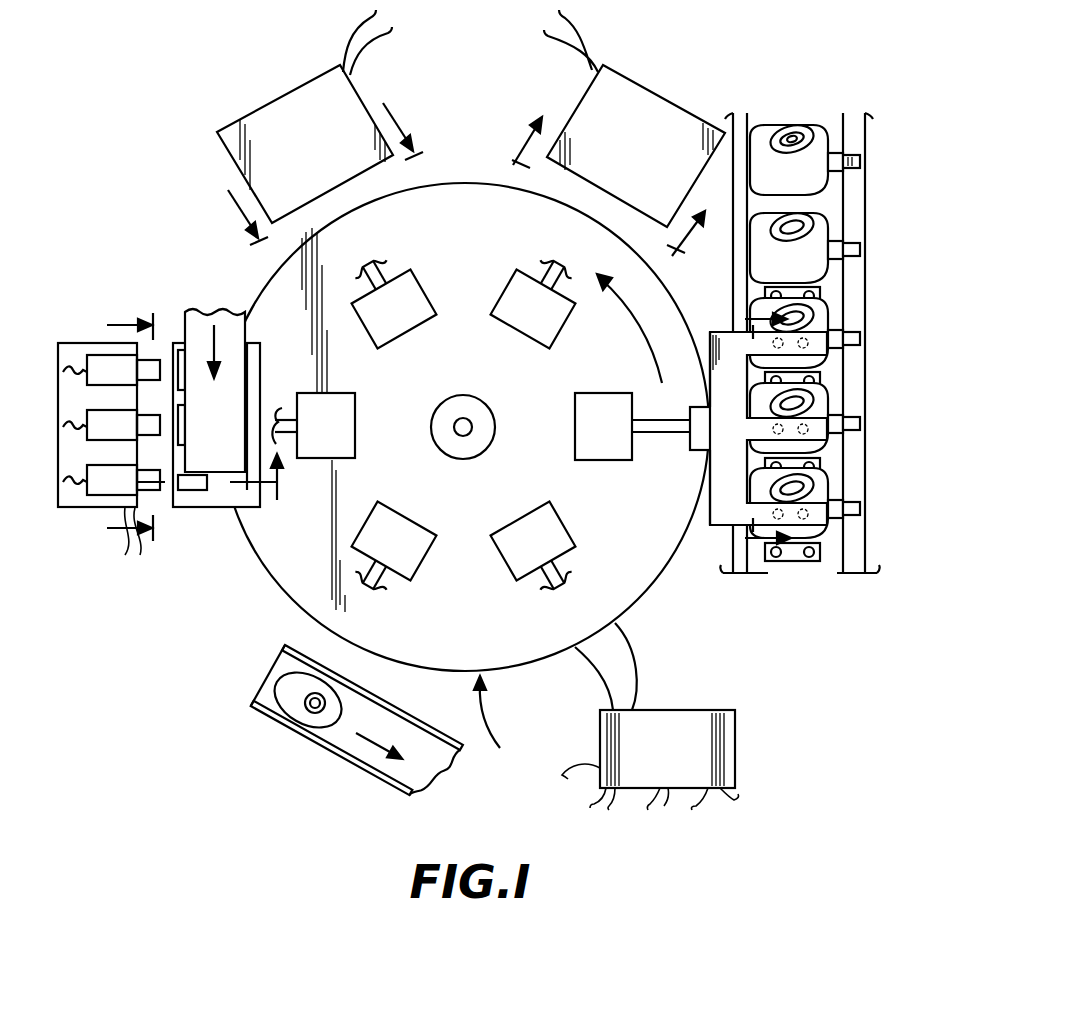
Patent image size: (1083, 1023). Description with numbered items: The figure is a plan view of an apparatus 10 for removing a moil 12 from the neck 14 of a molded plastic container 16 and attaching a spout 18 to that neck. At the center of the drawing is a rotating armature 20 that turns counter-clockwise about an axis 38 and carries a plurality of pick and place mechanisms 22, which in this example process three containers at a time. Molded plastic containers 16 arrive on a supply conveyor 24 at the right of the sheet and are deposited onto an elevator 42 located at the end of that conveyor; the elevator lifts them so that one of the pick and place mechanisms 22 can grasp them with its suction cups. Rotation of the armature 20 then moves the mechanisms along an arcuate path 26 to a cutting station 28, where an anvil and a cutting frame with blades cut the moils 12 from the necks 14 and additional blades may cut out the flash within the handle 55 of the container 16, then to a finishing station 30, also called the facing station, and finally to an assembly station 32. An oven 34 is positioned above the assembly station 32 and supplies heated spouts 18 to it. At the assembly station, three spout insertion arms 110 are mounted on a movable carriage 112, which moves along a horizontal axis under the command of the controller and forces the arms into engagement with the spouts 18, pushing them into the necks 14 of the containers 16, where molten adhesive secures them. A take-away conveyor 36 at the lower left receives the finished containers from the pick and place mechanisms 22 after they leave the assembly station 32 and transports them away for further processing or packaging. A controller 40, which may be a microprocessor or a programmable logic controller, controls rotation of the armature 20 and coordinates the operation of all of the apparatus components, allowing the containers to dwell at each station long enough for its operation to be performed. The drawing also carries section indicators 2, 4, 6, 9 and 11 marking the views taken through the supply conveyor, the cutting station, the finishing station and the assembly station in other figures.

The section line 2- 2 is at (760, 431).
The section line 4- 4 is at (602, 199).
The section line 6- 6 is at (319, 164).
The section line 9- 9 is at (123, 427).
The apparatus 10 is at (496, 730).
The section line 11- 11 is at (194, 491).
The moil 12 is at (805, 288).
The neck 14 is at (818, 135).
The molded plastic container 16 is at (269, 688).
The spout 18 is at (305, 688).
The rotating armature 20 is at (253, 565).
The pick and place mechanism 22 is at (590, 452).
The supply conveyor 24 is at (740, 110).
The arcuate path 26 is at (627, 308).
The cutting station 28 is at (653, 154).
The finishing station 30 is at (325, 154).
The assembly station 32 is at (239, 426).
The oven 34 is at (238, 333).
The take-away conveyor 36 is at (325, 726).
The axis 38 is at (463, 420).
The controller 40 is at (648, 749).
The elevator 42 is at (795, 563).
The handle 55 is at (790, 132).
The spout insertion arm 110 is at (97, 350).
The movable carriage 112 is at (109, 429).